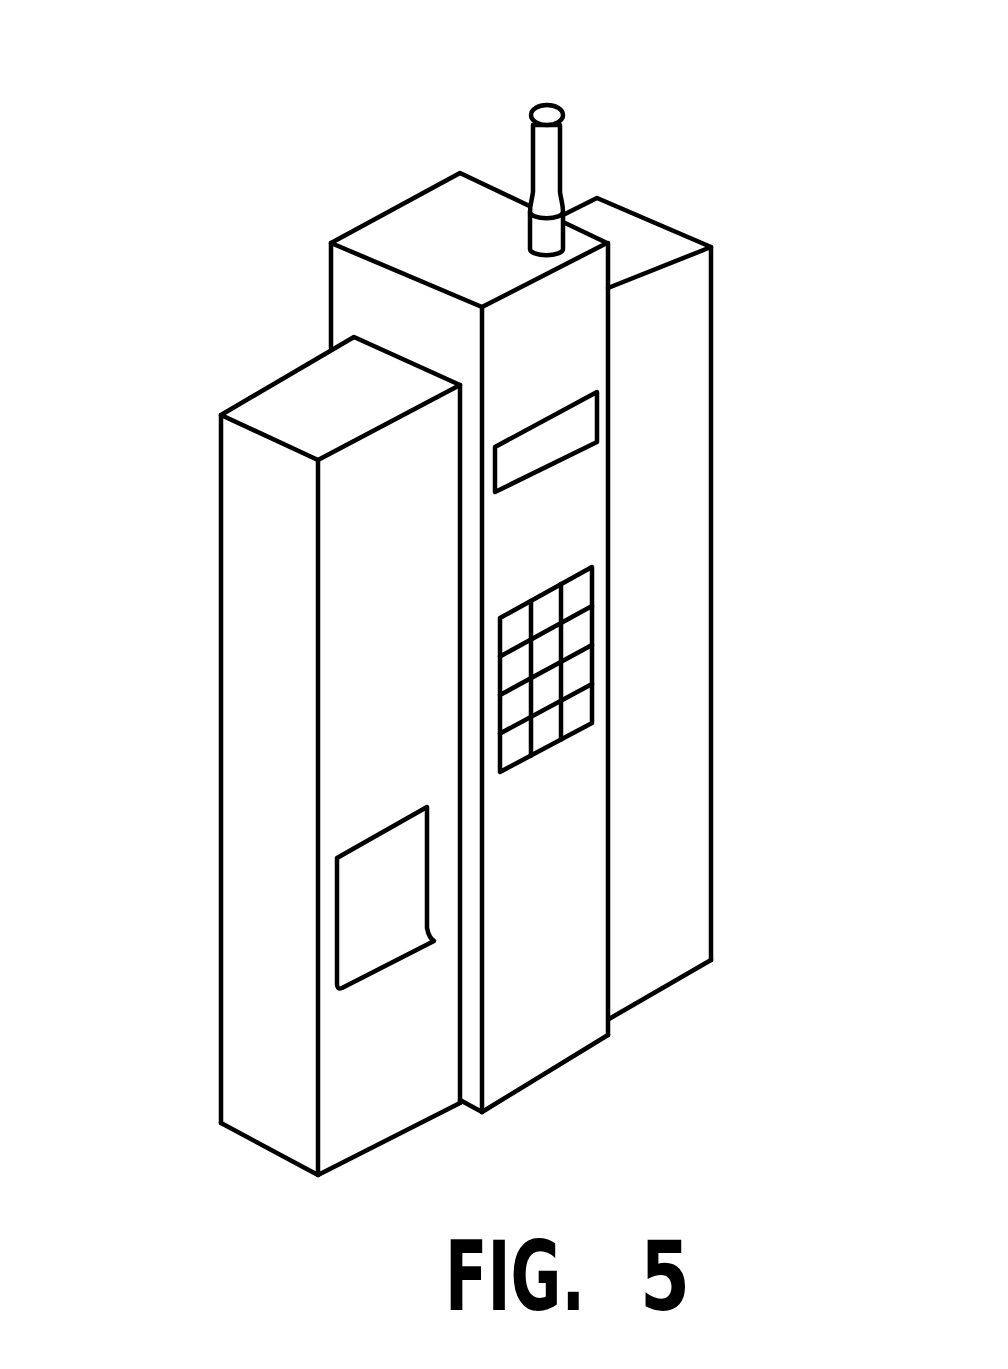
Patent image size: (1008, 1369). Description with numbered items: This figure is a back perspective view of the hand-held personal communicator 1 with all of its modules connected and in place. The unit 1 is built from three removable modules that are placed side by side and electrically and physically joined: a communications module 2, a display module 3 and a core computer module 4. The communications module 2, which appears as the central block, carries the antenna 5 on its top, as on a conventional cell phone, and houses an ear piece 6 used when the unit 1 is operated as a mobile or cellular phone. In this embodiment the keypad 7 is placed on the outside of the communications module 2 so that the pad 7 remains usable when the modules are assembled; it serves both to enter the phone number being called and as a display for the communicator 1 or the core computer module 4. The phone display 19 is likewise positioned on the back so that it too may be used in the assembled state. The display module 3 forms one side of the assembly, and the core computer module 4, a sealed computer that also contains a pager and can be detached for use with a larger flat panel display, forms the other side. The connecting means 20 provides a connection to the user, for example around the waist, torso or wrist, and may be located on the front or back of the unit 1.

The hand-held personal communicator 1 is at (456, 587).
The communications module 2 is at (521, 592).
The display module 3 is at (263, 756).
The core computer module 4 is at (712, 857).
The antenna 5 is at (560, 107).
The ear piece 6 is at (331, 292).
The keypad 7 is at (580, 667).
The phone display 19 is at (590, 417).
The connecting means 20 is at (347, 915).